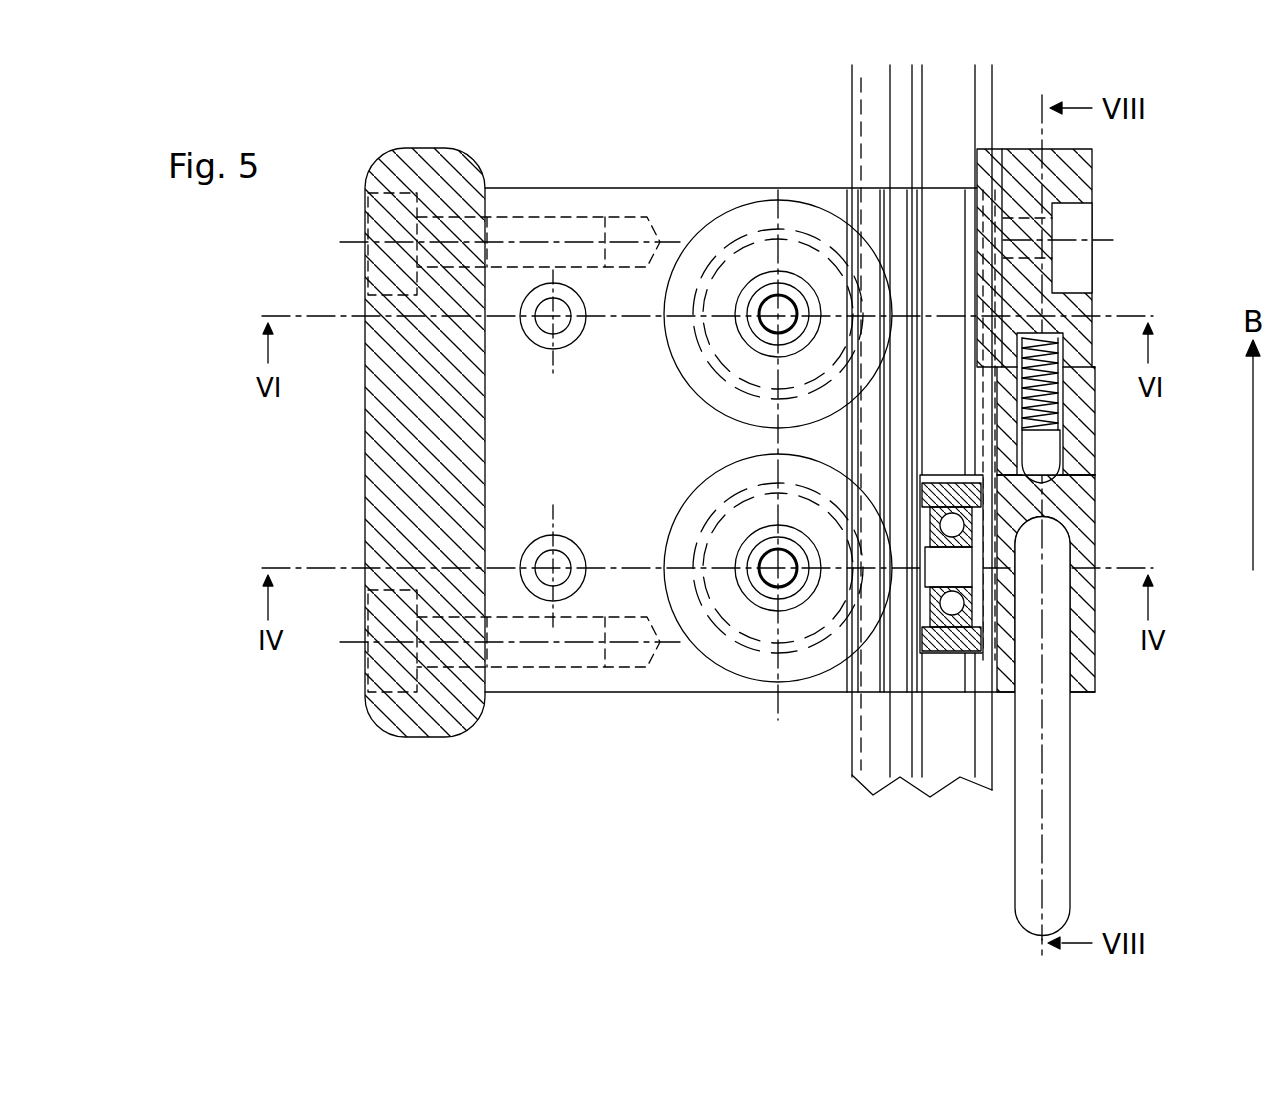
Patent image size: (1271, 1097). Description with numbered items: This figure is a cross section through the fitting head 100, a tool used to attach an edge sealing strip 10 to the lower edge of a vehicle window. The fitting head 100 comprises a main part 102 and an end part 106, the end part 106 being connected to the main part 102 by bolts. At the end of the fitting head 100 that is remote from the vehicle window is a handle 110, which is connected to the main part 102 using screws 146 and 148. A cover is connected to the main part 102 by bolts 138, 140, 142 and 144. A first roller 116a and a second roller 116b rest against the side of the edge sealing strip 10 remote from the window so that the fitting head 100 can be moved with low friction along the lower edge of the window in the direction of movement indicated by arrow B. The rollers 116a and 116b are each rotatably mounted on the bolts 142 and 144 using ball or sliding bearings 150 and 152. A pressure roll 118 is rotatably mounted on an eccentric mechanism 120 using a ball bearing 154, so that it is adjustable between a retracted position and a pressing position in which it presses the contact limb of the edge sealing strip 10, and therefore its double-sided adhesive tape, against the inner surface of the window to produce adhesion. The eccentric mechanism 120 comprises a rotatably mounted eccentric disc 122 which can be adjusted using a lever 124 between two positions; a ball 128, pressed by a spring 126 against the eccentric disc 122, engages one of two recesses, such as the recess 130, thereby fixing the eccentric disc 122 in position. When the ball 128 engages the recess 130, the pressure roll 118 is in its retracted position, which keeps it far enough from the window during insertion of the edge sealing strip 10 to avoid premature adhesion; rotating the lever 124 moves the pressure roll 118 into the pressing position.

The fitting head 100 is at (549, 126).
The edge sealing strip 10 is at (855, 787).
The main part 102 is at (634, 680).
The end part 106 is at (1085, 192).
The handle 110 is at (365, 378).
The first roller 116a is at (748, 200).
The second roller 116b is at (753, 665).
The pressure roll 118 is at (943, 652).
The eccentric mechanism 120 is at (1098, 502).
The eccentric disc 122 is at (1085, 640).
The lever 124 is at (1060, 845).
The spring 126 is at (1062, 340).
The ball 128 is at (1066, 465).
The recess 130 is at (1080, 505).
The bolt 138 is at (555, 540).
The bolt 140 is at (562, 338).
The bolt 142 is at (740, 325).
The bolt 144 is at (765, 540).
The screw 146 is at (548, 660).
The screw 148 is at (578, 232).
The ball or sliding bearing 150 is at (799, 270).
The ball or sliding bearing 152 is at (795, 612).
The ball bearing 154 is at (945, 480).